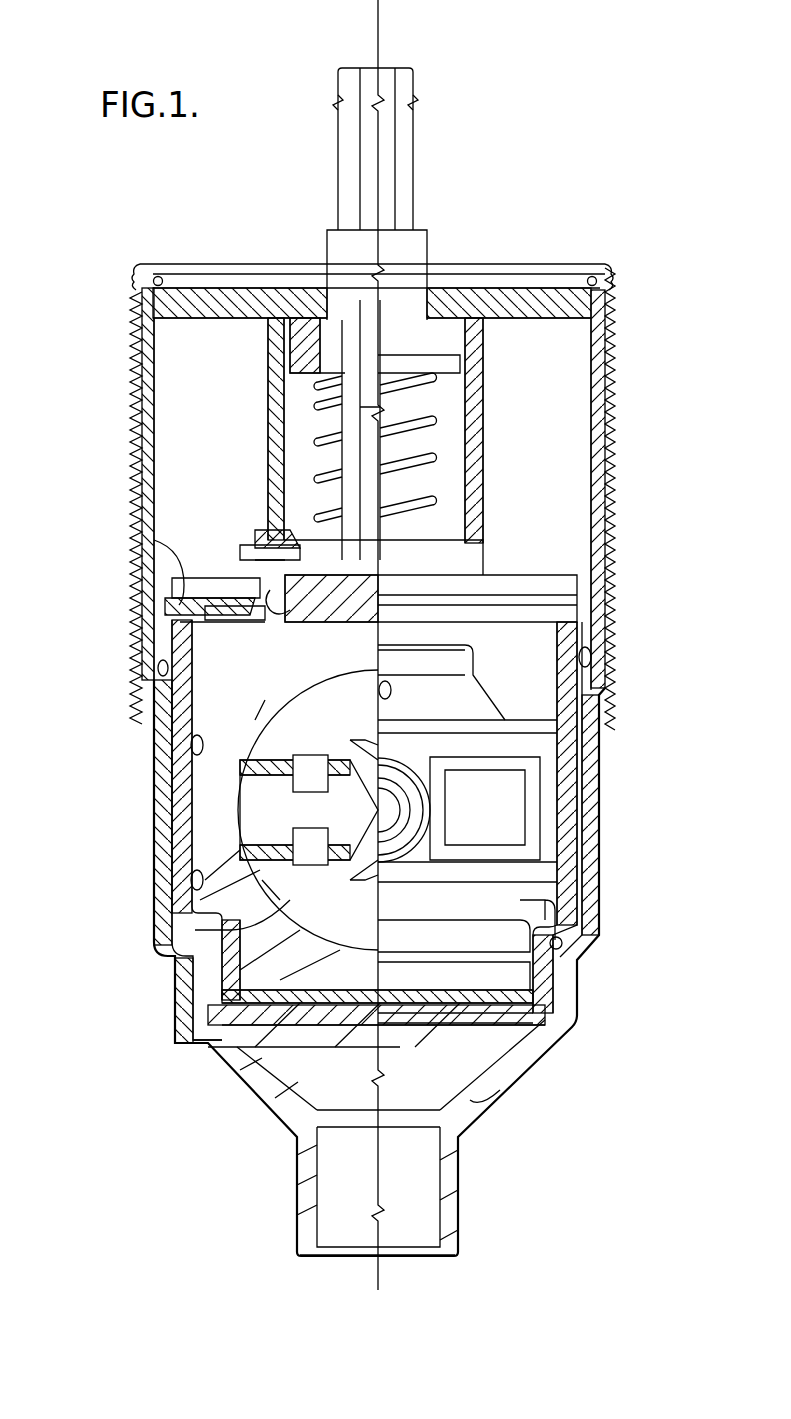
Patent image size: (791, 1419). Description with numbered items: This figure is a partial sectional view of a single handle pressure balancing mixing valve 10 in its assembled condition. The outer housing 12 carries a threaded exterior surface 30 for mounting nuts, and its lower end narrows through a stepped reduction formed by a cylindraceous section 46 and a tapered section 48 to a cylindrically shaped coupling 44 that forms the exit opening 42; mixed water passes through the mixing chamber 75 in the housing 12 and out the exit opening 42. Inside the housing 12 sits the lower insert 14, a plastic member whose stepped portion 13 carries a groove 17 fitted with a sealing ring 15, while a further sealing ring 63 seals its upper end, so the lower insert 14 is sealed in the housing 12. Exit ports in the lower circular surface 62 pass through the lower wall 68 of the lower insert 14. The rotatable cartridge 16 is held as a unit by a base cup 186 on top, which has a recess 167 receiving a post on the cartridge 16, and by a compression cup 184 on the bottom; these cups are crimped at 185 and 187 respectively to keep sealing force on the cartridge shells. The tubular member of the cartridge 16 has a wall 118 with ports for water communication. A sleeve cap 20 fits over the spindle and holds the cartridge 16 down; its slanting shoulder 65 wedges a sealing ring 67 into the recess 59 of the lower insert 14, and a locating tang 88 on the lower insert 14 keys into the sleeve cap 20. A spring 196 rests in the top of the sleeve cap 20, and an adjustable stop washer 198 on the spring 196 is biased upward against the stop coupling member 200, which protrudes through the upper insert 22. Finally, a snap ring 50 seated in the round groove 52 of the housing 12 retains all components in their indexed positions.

The pressure balancing mixing valve 10 is at (675, 1089).
The housing 12 is at (600, 826).
The stepped portion 13 is at (160, 712).
The lower insert 14 is at (600, 772).
The sealing ring 15 is at (182, 662).
The rotatable cartridge 16 is at (492, 712).
The groove 17 is at (165, 958).
The sleeve cap 20 is at (500, 580).
The upper insert 22 is at (483, 470).
The threaded exterior surface 30 is at (618, 412).
The exit opening 42 is at (414, 1258).
The cylindrically shaped coupling 44 is at (462, 1216).
The cylindraceous section 46 is at (180, 1012).
The tapered section 48 is at (245, 1088).
The snap ring 50 is at (556, 275).
The round groove 52 is at (587, 274).
The recess 59 is at (150, 636).
The lower circular surface 62 is at (340, 932).
The sealing ring 63 is at (155, 682).
The slanting shoulder 65 is at (150, 588).
The sealing ring 67 is at (145, 616).
The lower wall 68 is at (295, 1024).
The mixing chamber 75 is at (495, 1088).
The locating tang 88 is at (145, 515).
The wall 118 is at (405, 107).
The recess 167 is at (262, 540).
The compression cup 184 is at (240, 967).
The crimp 185 is at (264, 878).
The base cup 186 is at (262, 570).
The crimp 187 is at (280, 645).
The spring 196 is at (435, 455).
The adjustable stop washer 198 is at (455, 360).
The stop coupling member 200 is at (432, 225).